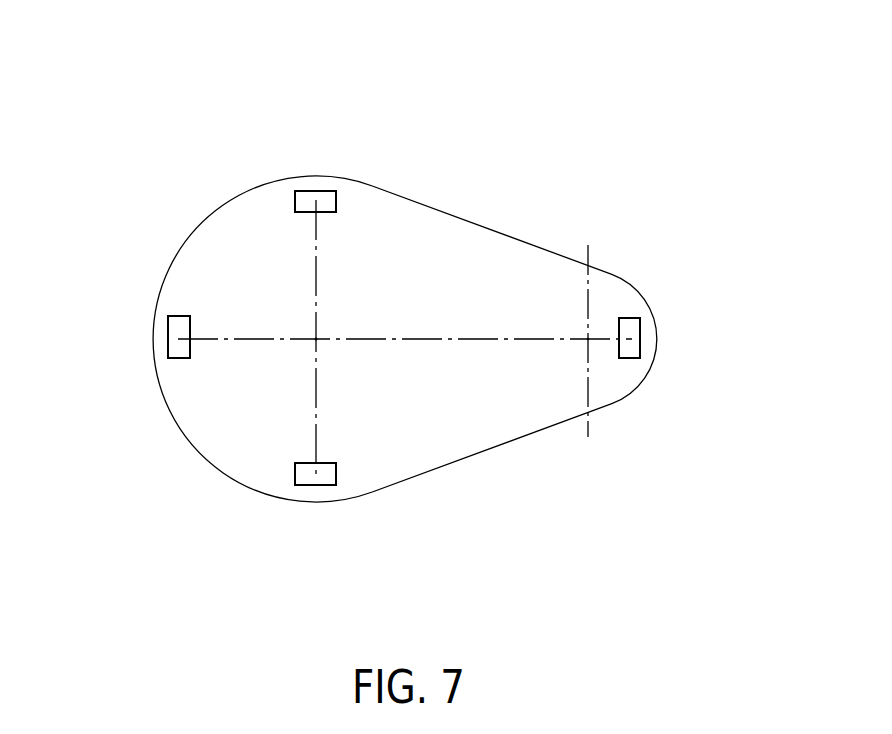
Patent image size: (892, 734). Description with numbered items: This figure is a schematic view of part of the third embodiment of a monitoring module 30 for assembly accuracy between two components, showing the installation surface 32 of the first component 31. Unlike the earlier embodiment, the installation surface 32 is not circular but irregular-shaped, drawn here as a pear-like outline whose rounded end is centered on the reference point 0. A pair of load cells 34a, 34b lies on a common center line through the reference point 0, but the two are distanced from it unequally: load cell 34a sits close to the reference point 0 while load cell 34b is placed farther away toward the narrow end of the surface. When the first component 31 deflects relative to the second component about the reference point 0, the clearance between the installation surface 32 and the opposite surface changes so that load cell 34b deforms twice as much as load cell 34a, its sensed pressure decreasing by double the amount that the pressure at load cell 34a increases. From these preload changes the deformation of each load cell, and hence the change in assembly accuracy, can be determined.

The monitoring module 30 is at (662, 118).
The first component 31 is at (210, 467).
The installation surface 32 is at (210, 385).
The reference point 0 is at (316, 339).
The load cell 34a is at (178, 316).
The load cell 34b is at (642, 348).